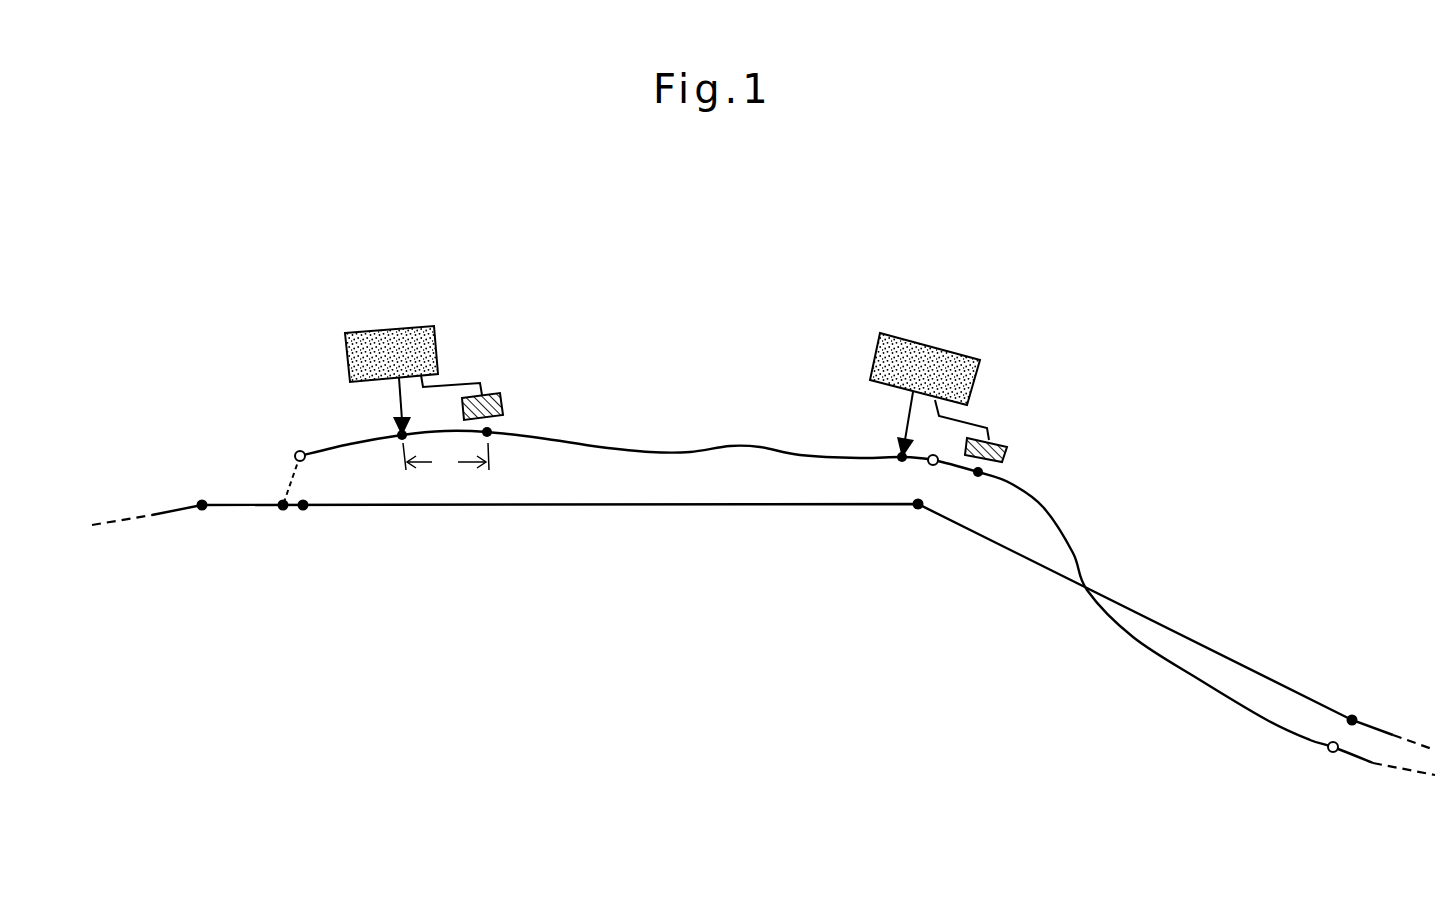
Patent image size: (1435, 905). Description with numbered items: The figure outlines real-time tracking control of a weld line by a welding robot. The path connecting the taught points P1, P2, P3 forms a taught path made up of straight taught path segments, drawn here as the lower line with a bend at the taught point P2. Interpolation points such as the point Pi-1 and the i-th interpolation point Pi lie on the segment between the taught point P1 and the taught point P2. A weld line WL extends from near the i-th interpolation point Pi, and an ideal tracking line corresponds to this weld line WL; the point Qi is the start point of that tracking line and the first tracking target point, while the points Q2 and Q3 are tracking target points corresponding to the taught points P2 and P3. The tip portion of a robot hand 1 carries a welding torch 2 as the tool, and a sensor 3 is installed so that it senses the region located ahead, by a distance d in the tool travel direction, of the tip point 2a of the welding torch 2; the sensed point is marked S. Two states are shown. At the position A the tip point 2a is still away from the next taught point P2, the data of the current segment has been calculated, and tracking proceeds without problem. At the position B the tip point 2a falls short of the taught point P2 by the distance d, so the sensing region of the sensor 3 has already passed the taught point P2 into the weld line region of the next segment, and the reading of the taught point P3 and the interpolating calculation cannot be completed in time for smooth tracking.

The robot hand 1 is at (438, 343).
The welding torch 2 is at (398, 402).
The tip point of the welding torch 2a is at (400, 434).
The sensor 3 is at (502, 402).
The sensor detection point S is at (488, 431).
The weld line WL is at (727, 447).
The position A is at (535, 288).
The position B is at (1066, 391).
The distance d is at (446, 459).
The start point of tracking line Qi is at (297, 452).
The taught point P1 is at (201, 511).
The interpolation point Pi-1 is at (282, 511).
The i-th interpolation point Pi is at (304, 511).
The taught point P2 is at (918, 510).
The tracking target point Q2 is at (934, 466).
The taught point P3 is at (1351, 715).
The tracking target point Q3 is at (1333, 753).